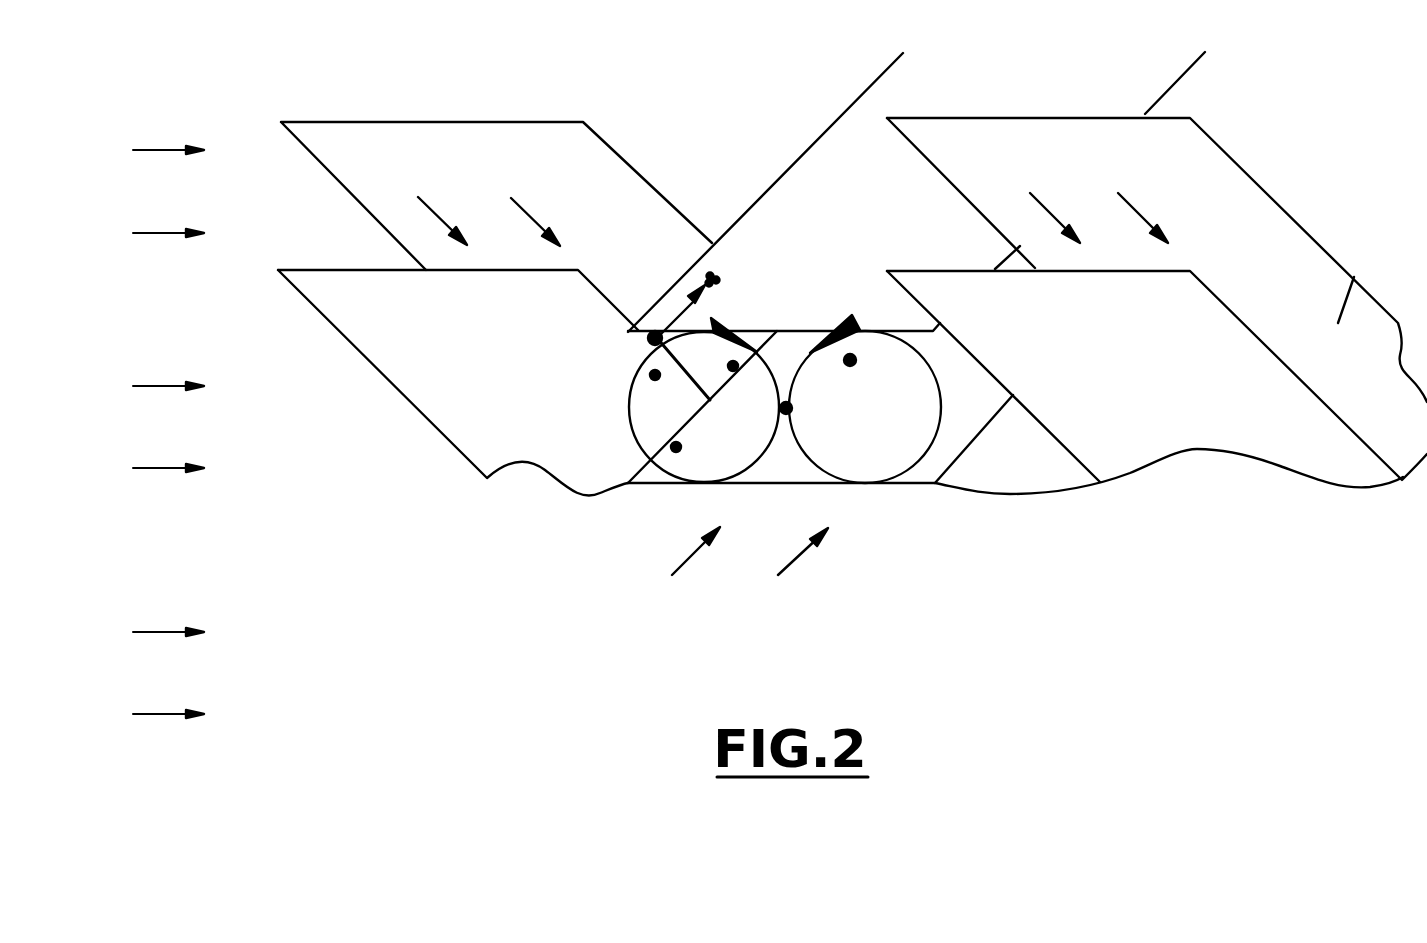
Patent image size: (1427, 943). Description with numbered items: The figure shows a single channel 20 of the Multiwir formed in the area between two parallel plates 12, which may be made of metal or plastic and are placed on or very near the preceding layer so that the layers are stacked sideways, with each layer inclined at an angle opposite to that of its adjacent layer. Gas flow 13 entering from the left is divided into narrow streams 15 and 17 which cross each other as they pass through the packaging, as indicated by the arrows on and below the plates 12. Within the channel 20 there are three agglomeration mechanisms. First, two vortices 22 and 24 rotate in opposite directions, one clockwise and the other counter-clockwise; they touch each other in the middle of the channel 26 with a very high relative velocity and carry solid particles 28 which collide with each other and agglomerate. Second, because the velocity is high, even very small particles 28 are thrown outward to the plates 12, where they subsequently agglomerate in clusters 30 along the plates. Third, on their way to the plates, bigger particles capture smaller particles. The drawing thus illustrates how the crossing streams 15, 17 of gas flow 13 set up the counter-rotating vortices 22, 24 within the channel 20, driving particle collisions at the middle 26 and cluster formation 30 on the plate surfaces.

The plate 12 is at (1255, 328).
The gas flow 13 is at (170, 432).
The narrow stream 15 is at (800, 553).
The narrow stream 17 is at (1125, 210).
The channel 20 is at (960, 395).
The vortex 22 is at (923, 452).
The vortex 24 is at (755, 463).
The middle of the channel 26 is at (790, 413).
The solid particles 28 is at (667, 458).
The clusters 30 is at (658, 333).